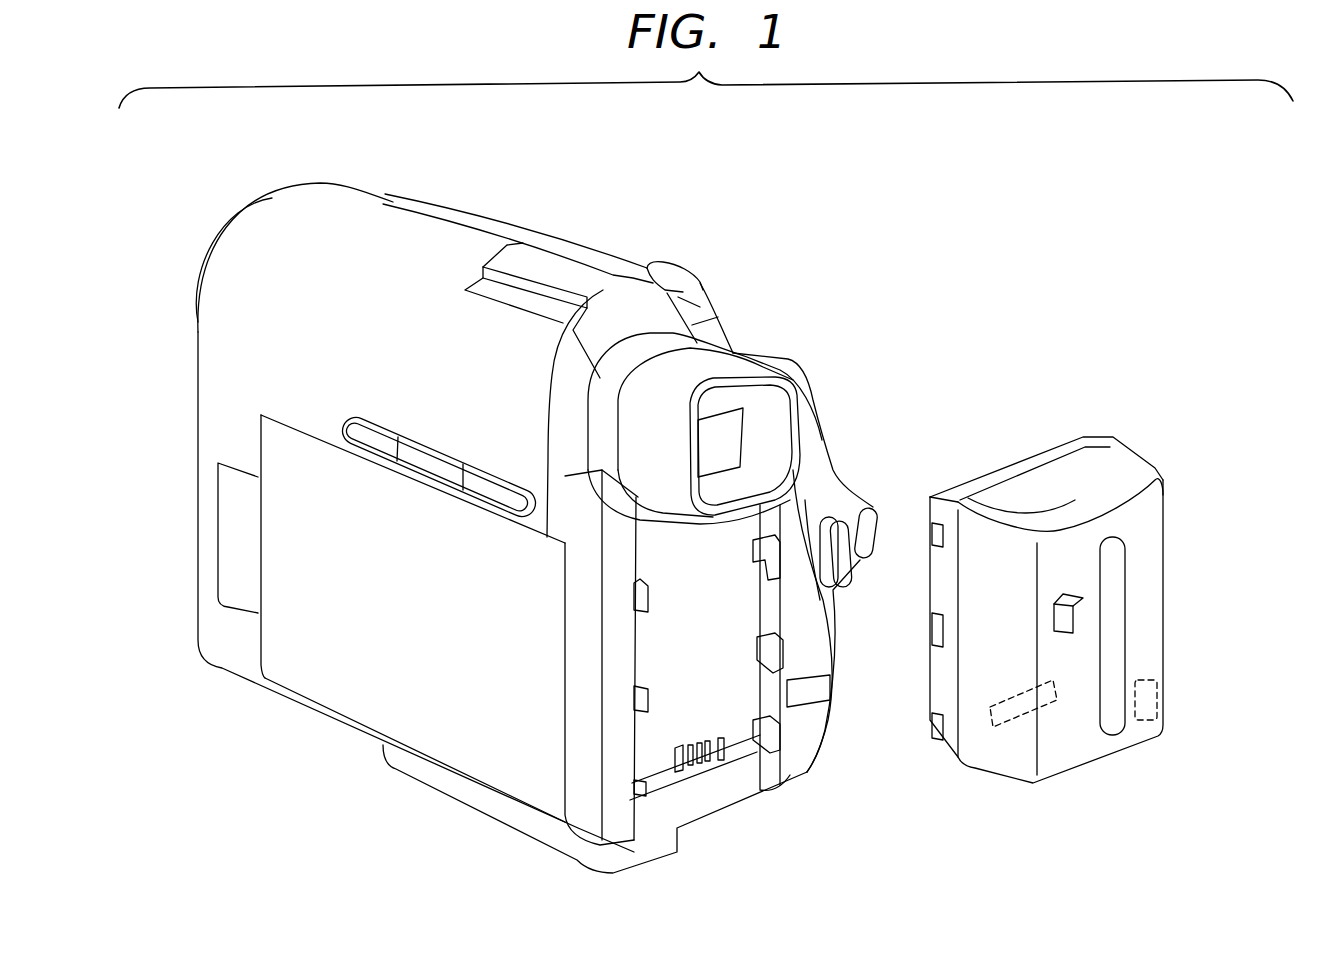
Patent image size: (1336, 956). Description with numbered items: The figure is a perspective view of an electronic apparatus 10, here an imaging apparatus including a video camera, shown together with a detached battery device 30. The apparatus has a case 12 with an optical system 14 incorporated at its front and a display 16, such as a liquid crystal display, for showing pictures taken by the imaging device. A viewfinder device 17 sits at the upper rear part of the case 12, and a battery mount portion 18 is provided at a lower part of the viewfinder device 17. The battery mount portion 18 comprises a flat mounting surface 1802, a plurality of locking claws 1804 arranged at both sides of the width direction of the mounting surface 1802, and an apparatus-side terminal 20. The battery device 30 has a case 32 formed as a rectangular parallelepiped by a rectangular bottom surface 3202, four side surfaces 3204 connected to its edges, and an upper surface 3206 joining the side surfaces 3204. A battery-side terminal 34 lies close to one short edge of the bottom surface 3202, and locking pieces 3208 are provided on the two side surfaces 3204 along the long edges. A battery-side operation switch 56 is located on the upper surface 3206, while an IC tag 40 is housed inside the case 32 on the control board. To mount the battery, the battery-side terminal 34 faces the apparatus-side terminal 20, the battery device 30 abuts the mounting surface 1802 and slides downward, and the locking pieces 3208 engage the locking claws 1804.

The electronic apparatus 10 is at (616, 222).
The case 12 is at (395, 217).
The optical system 14 is at (222, 228).
The display 16 is at (325, 672).
The viewfinder device 17 is at (738, 370).
The battery mount portion 18 is at (712, 672).
The mounting surface 1802 is at (635, 602).
The locking claws 1804 is at (660, 578).
The apparatus-side terminal 20 is at (707, 770).
The battery device 30 is at (1142, 443).
The case 32 is at (1137, 470).
The bottom surface 3202 is at (1052, 440).
The side surfaces 3204 is at (997, 540).
The upper surface 3206 is at (1150, 510).
The locking pieces 3208 is at (933, 728).
The battery-side terminal 34 is at (1053, 710).
The IC tag 40 is at (1160, 700).
The battery-side operation switch 56 is at (1073, 618).